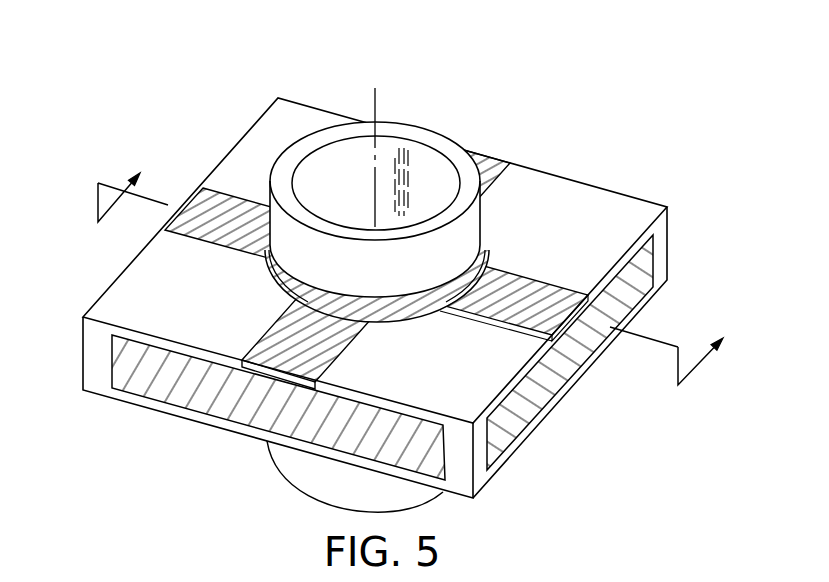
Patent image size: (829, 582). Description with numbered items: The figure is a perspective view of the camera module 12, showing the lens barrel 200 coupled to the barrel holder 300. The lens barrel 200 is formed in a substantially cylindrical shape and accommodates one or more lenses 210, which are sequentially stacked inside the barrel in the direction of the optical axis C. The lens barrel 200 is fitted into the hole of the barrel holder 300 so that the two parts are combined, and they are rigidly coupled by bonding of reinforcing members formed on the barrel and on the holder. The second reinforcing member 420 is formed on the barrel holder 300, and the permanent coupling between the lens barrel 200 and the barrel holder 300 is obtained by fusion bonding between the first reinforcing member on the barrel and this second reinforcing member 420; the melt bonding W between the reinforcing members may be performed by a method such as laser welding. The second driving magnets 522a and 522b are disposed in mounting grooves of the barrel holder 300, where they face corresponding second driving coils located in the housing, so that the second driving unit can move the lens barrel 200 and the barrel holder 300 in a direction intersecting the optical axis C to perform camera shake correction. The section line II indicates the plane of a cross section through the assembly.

The camera module 12 is at (375, 256).
The lens barrel 200 is at (378, 180).
The lens 210 is at (338, 158).
The optical axis C is at (376, 146).
The barrel holder 300 is at (364, 298).
The second reinforcing member 420 is at (209, 203).
The melt bonding W is at (306, 308).
The second driving magnet 522a is at (153, 383).
The second driving magnet 522b is at (513, 425).
The section line II- II is at (414, 266).